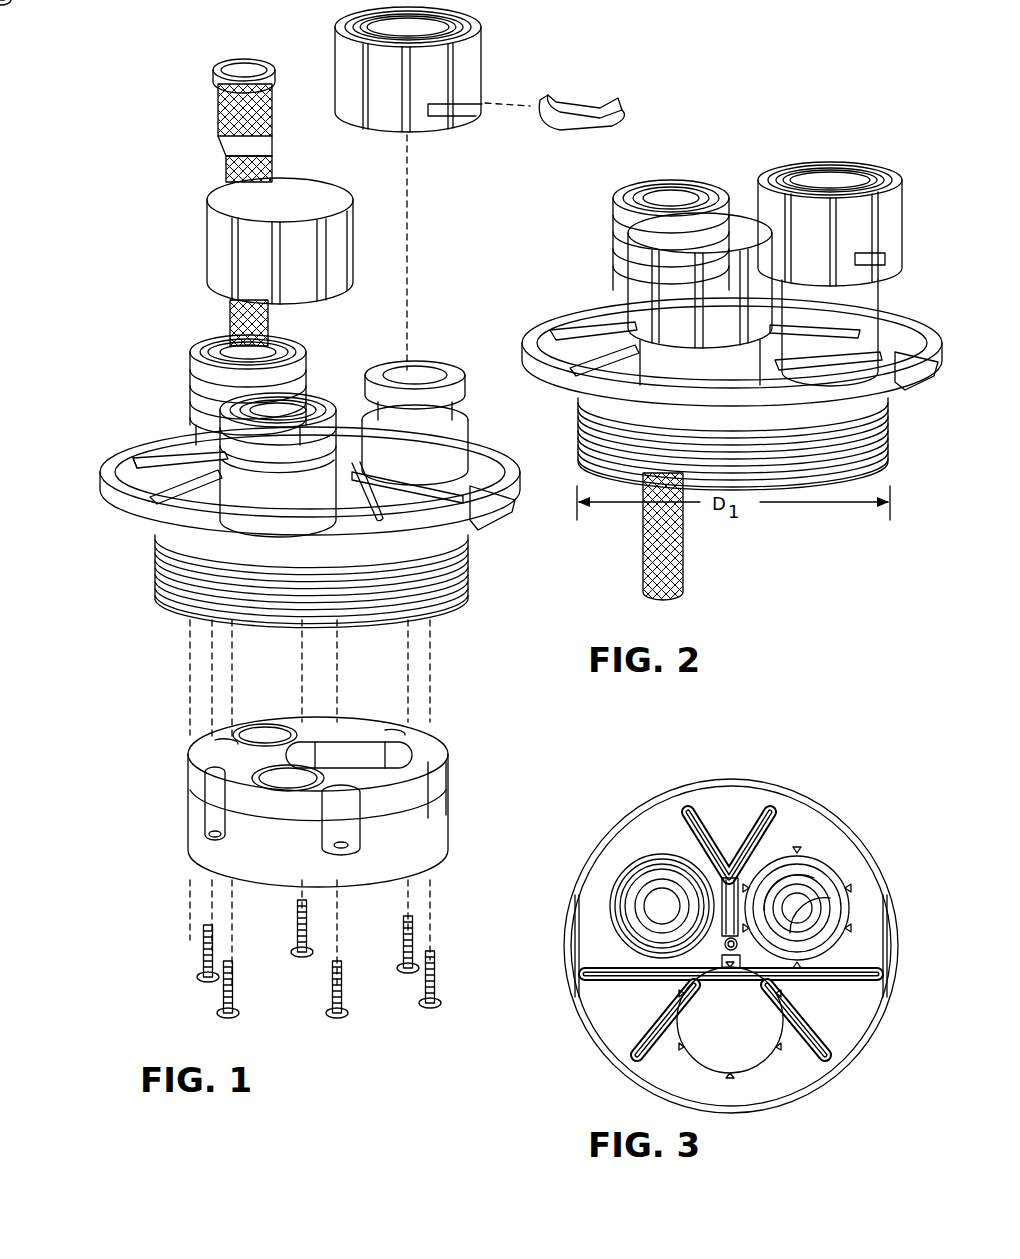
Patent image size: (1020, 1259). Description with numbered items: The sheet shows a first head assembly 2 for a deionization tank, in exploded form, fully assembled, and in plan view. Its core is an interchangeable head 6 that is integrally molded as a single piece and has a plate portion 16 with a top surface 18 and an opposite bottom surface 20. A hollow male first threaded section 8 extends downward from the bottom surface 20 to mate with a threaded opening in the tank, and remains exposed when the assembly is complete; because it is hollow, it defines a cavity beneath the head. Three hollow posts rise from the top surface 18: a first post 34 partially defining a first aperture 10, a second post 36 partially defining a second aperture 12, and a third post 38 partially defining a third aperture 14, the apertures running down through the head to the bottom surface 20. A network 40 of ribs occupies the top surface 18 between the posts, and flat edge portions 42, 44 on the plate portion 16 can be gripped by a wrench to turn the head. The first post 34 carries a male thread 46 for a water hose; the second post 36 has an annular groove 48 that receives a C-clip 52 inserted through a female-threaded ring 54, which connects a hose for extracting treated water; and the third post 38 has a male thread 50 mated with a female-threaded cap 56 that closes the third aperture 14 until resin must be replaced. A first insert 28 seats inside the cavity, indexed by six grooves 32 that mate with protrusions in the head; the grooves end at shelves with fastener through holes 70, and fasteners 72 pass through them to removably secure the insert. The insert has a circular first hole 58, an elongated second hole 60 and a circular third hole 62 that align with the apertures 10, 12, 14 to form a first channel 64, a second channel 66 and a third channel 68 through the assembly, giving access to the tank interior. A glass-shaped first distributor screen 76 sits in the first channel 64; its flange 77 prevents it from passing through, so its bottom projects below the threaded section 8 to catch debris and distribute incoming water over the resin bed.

In FIG. 1, the first head assembly 2 is at (65, 112).
In FIG. 2, the first head assembly 2 is at (916, 132).
In FIG. 3, the first head assembly 2 is at (790, 762).
In FIG. 1, the interchangeable head 6 is at (95, 462).
In FIG. 2, the interchangeable head 6 is at (905, 305).
In FIG. 3, the interchangeable head 6 is at (852, 1024).
In FIG. 1, the first threaded section 8 is at (158, 572).
In FIG. 2, the first threaded section 8 is at (878, 440).
In FIG. 1, the first aperture 10 is at (230, 336).
In FIG. 1, the second aperture 12 is at (410, 365).
In FIG. 1, the third aperture 14 is at (302, 398).
In FIG. 1, the plate portion 16 is at (115, 488).
In FIG. 1, the top surface 18 is at (178, 430).
In FIG. 1, the bottom surface 20 is at (120, 535).
In FIG. 1, the first insert 28 is at (192, 800).
In FIG. 1, the grooves 32 is at (212, 792).
In FIG. 1, the first post 34 is at (200, 390).
In FIG. 2, the first post 34 is at (615, 262).
In FIG. 1, the second post 36 is at (450, 448).
In FIG. 2, the second post 36 is at (875, 298).
In FIG. 1, the third post 38 is at (250, 505).
In FIG. 2, the third post 38 is at (700, 352).
In FIG. 1, the network of ribs 40 is at (172, 482).
In FIG. 2, the network of ribs 40 is at (716, 349).
In FIG. 3, the network of ribs 40 is at (702, 830).
In FIG. 1, the flat edge portion 42 is at (500, 508).
In FIG. 2, the flat edge portion 42 is at (912, 368).
In FIG. 3, the flat edge portion 42 is at (893, 936).
In FIG. 3, the flat edge portion 44 is at (568, 944).
In FIG. 1, the male thread 46 is at (218, 350).
In FIG. 1, the annular groove 48 is at (438, 395).
In FIG. 1, the male thread 50 is at (290, 452).
In FIG. 2, the C-clip 52 is at (610, 110).
In FIG. 1, the female-threaded ring 54 is at (475, 50).
In FIG. 2, the female-threaded ring 54 is at (890, 200).
In FIG. 3, the female-threaded ring 54 is at (847, 888).
In FIG. 1, the female-threaded cap 56 is at (212, 246).
In FIG. 2, the female-threaded cap 56 is at (645, 292).
In FIG. 3, the female-threaded cap 56 is at (693, 1040).
In FIG. 1, the first hole 58 is at (262, 728).
In FIG. 1, the second hole 60 is at (365, 746).
In FIG. 1, the third hole 62 is at (286, 770).
In FIG. 2, the first channel 64 is at (673, 196).
In FIG. 3, the first channel 64 is at (660, 902).
In FIG. 2, the second channel 66 is at (850, 170).
In FIG. 3, the second channel 66 is at (798, 903).
In FIG. 2, the third channel 68 is at (720, 218).
In FIG. 3, the third channel 68 is at (742, 1030).
In FIG. 1, the fastener through holes 70 is at (208, 828).
In FIG. 1, the fasteners 72 is at (298, 942).
In FIG. 1, the first distributor screen 76 is at (218, 116).
In FIG. 2, the first distributor screen 76 is at (668, 552).
In FIG. 3, the first distributor screen 76 is at (643, 907).
In FIG. 1, the flange 77 is at (218, 70).